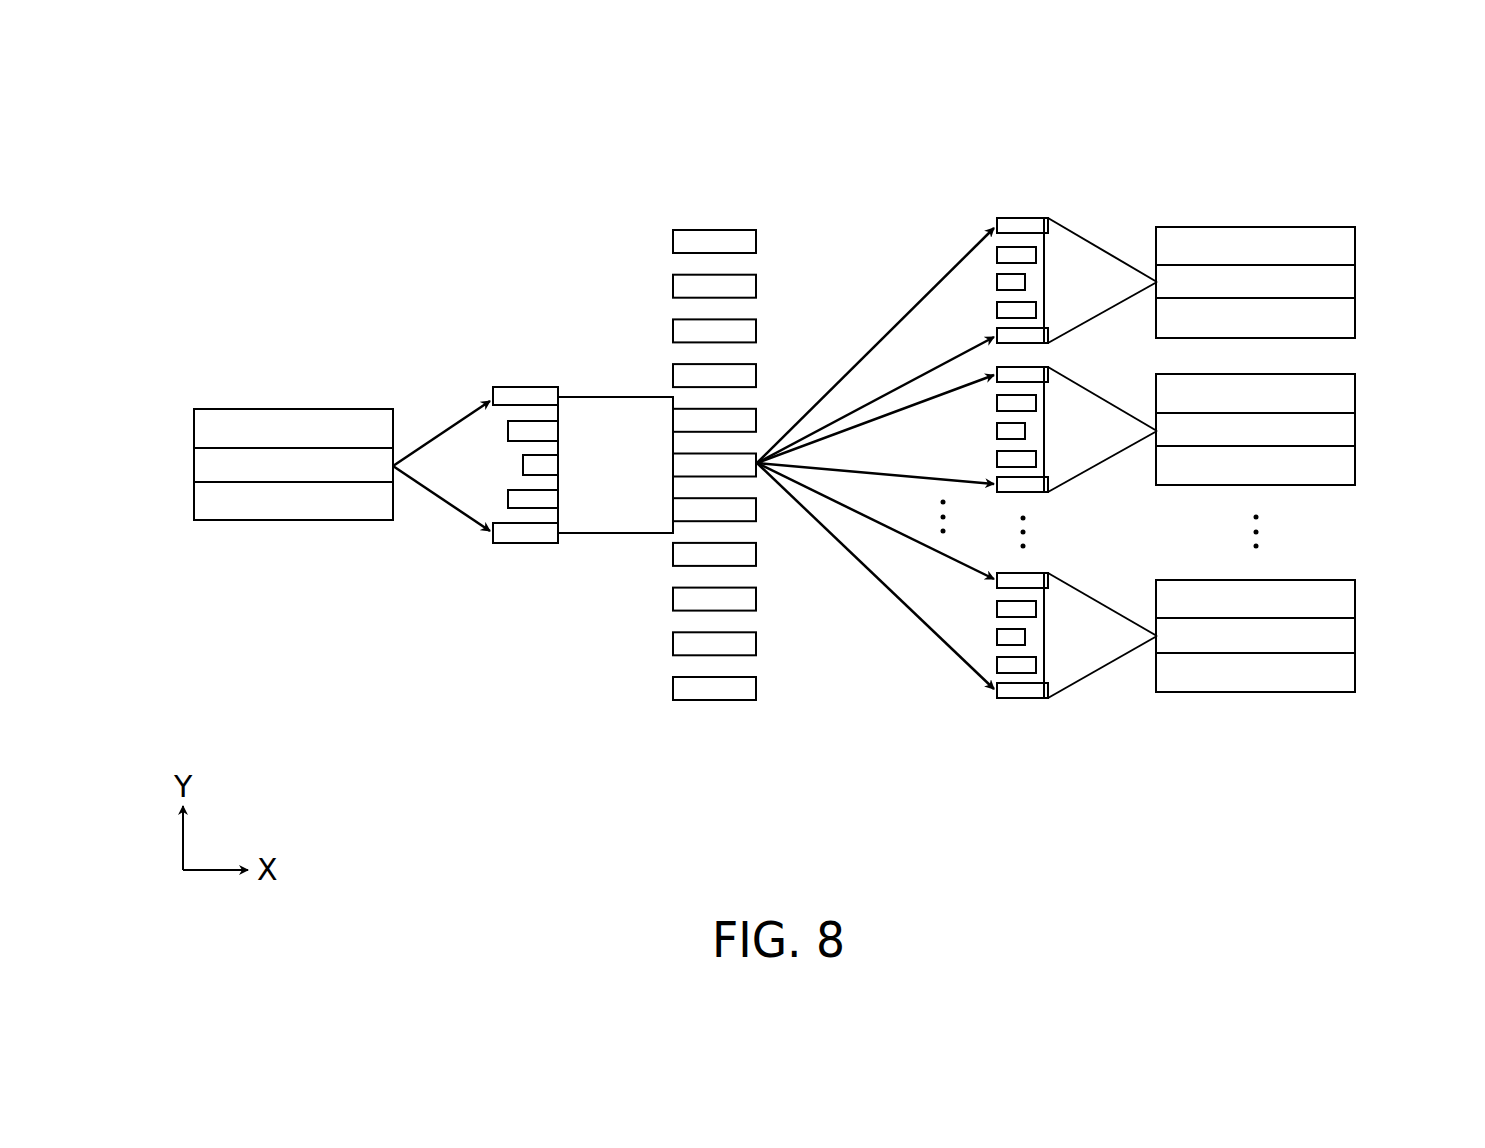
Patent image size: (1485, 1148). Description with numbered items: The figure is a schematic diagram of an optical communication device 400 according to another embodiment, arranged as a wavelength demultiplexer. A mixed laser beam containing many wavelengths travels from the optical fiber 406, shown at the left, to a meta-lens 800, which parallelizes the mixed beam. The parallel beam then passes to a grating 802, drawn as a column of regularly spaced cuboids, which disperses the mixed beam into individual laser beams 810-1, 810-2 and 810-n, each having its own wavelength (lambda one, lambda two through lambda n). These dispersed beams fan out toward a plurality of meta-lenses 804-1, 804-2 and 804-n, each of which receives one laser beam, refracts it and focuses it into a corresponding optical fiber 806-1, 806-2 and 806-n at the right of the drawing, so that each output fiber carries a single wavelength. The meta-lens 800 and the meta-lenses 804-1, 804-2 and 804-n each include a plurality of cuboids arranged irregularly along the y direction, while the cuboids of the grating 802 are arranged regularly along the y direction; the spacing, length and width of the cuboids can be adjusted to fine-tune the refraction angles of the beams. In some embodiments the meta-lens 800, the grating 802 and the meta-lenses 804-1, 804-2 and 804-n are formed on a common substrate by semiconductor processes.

The optical communication device 400 is at (150, 76).
The optical fiber 406 is at (297, 508).
The meta-lens 800 is at (522, 387).
The grating 802 is at (713, 230).
The meta-lens 804-1 is at (1020, 218).
The meta-lens 804-2 is at (1030, 492).
The meta-lens 804-n is at (1020, 700).
The optical fiber 806-1 is at (1355, 242).
The optical fiber 806-2 is at (1355, 390).
The optical fiber 806-n is at (1356, 596).
The laser beam 810-1 is at (985, 335).
The laser beam 810-2 is at (983, 457).
The laser beam 810-n is at (985, 617).